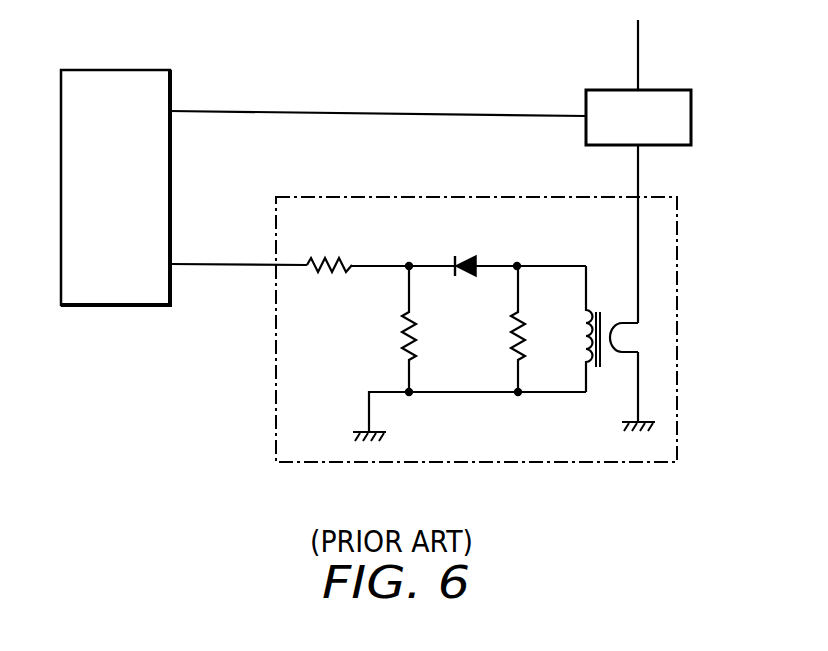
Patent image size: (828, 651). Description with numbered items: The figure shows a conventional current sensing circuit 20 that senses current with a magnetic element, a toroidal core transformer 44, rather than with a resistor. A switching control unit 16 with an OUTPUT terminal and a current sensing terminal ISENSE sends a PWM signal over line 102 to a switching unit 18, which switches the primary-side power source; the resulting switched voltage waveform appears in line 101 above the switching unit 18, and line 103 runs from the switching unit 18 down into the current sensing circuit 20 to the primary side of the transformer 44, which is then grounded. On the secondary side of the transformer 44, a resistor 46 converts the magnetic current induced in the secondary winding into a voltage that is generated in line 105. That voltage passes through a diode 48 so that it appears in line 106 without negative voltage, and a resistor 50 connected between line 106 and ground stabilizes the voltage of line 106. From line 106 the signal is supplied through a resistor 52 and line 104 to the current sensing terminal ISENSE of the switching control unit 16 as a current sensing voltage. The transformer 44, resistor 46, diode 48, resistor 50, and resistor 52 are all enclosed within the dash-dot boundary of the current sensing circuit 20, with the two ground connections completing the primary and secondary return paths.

The switching control unit 16 is at (116, 70).
The switching unit 18 is at (692, 120).
The current sensing circuit 20 is at (678, 330).
The transformer 44 is at (601, 302).
The resistor 46 is at (536, 331).
The diode 48 is at (464, 253).
The resistor 50 is at (426, 331).
The resistor 52 is at (329, 252).
The line 101 is at (640, 62).
The line 102 is at (287, 111).
The line 103 is at (640, 173).
The line 104 is at (220, 264).
The line 105 is at (498, 265).
The line 106 is at (381, 265).